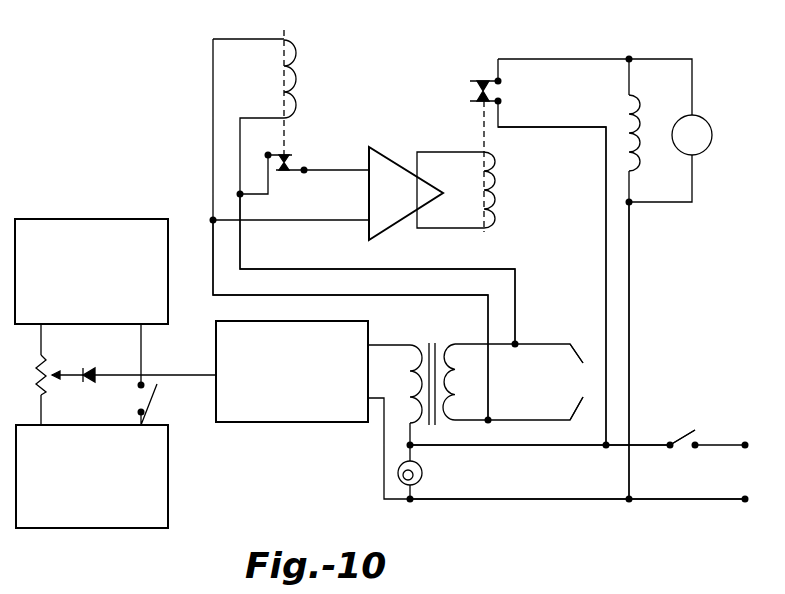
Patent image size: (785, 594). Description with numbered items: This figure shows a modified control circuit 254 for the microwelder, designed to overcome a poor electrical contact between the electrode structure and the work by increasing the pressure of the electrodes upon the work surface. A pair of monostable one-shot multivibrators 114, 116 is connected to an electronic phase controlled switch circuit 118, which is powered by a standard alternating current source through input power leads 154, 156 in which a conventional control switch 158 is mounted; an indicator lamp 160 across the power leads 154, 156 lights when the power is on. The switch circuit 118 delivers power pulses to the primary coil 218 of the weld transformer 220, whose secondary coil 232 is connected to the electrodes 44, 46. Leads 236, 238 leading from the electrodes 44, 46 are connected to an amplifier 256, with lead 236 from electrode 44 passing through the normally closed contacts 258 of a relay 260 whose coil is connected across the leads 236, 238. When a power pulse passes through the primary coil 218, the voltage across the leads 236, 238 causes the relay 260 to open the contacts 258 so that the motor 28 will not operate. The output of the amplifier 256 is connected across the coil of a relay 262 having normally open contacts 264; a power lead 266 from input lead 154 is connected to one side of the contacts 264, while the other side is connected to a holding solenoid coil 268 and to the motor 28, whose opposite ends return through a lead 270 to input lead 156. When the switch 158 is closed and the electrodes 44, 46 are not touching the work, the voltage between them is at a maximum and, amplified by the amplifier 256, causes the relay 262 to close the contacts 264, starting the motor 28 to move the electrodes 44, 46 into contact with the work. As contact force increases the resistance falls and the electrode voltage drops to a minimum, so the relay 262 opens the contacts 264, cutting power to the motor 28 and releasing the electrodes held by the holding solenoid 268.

The modified control circuit 254 is at (143, 188).
The monostable one-shot multivibrator 114 is at (55, 217).
The monostable one-shot multivibrator 116 is at (155, 422).
The phase controlled switch circuit 118 is at (228, 319).
The relay 260 is at (297, 68).
The normally closed contacts 258 is at (292, 166).
The amplifier 256 is at (406, 193).
The relay 262 is at (497, 184).
The normally open contacts 264 is at (479, 80).
The power lead 266 is at (530, 127).
The holding solenoid coil 268 is at (637, 100).
The motor 28 is at (706, 120).
The lead 270 is at (630, 256).
The lead 236 is at (351, 268).
The lead 238 is at (351, 294).
The primary coil 218 is at (412, 376).
The weld transformer 220 is at (432, 342).
The secondary coil 232 is at (450, 380).
The electrode 44 is at (523, 343).
The electrode 46 is at (523, 420).
The input power lead 154 is at (545, 445).
The input power lead 156 is at (545, 499).
The indicator lamp 160 is at (422, 471).
The control switch 158 is at (680, 436).